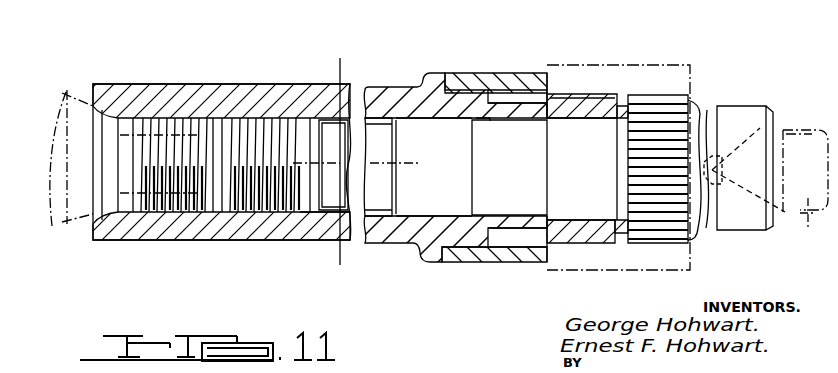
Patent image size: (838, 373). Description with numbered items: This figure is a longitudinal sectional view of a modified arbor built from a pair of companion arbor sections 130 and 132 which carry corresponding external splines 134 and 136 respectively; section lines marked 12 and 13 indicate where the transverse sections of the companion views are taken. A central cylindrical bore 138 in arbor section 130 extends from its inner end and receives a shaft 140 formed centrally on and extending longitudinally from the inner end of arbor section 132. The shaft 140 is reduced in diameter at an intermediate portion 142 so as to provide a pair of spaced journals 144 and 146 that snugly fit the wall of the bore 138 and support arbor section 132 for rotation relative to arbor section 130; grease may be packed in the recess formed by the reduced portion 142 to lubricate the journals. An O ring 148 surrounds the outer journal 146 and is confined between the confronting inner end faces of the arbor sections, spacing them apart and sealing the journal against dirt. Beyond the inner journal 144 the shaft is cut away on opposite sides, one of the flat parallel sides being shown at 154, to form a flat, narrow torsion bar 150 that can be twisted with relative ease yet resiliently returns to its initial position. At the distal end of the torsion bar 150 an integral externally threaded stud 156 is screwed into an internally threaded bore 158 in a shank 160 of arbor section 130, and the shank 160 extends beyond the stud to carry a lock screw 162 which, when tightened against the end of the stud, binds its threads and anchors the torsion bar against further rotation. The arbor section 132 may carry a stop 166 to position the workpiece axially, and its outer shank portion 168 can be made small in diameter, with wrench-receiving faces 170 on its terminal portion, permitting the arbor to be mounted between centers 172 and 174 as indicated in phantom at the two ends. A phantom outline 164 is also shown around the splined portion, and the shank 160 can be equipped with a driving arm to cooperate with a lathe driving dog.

The arbor section 130 is at (482, 112).
The arbor section 132 is at (709, 110).
The external splines 134 is at (578, 99).
The external splines 136 is at (662, 100).
The central cylindrical bore 138 is at (503, 118).
The shaft 140 is at (492, 121).
The reduced diameter portion 142 is at (503, 215).
The inner journal 144 is at (404, 205).
The outer journal 146 is at (582, 169).
The O ring 148 is at (620, 120).
The torsion bar 150 is at (322, 216).
The flat parallel side 154 is at (375, 132).
The externally threaded stud 156 is at (246, 118).
The internally threaded bore 158 is at (296, 118).
The shank 160 is at (185, 86).
The lock screw 162 is at (187, 214).
The phantom member 164 is at (598, 62).
The stop 166 is at (460, 92).
The outer shank portion 168 is at (758, 110).
The wrench-receiving faces 170 is at (760, 130).
The center 172 is at (56, 126).
The center 174 is at (806, 228).
The section line 12- 12 is at (361, 272).
The section line 13- 13 is at (422, 150).